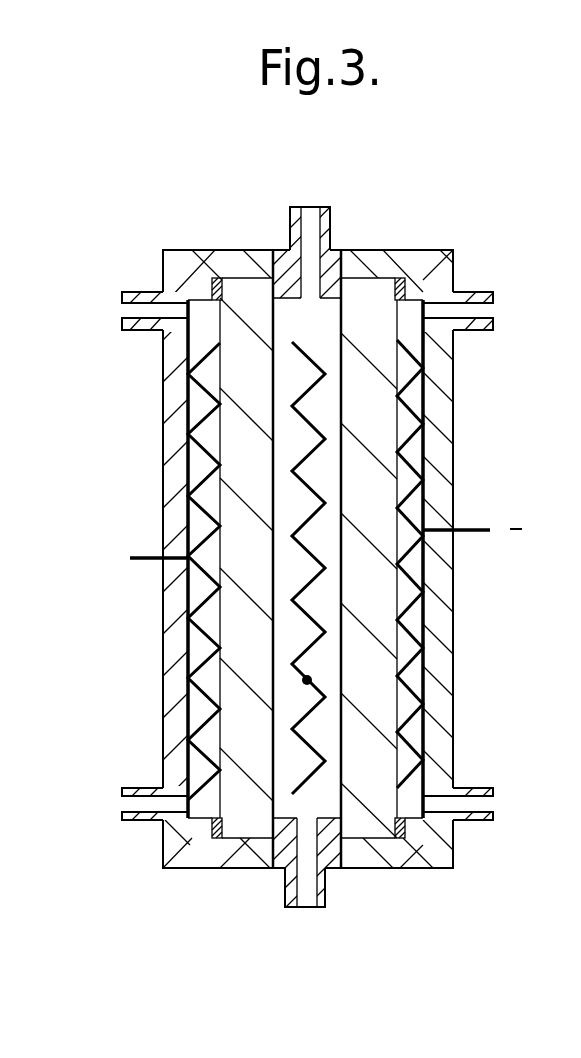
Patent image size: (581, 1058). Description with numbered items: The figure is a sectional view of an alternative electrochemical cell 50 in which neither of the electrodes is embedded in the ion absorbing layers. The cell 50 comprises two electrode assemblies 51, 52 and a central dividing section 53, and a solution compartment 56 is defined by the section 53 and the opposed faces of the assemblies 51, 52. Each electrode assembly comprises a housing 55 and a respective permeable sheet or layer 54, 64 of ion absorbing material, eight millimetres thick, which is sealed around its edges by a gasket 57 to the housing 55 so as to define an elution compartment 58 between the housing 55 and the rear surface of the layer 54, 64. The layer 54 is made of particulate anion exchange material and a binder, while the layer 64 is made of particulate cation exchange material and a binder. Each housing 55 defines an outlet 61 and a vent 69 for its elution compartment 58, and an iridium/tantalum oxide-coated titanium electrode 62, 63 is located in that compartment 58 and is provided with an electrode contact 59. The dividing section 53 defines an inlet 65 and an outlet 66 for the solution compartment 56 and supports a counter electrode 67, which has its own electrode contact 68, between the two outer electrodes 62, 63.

The electrochemical cell 50 is at (413, 213).
The electrode assembly 51 is at (240, 247).
The electrode assembly 52 is at (435, 248).
The dividing section 53 is at (337, 262).
The permeable sheet or layer 54 is at (235, 817).
The housing 55 is at (170, 740).
The solution compartment 56 is at (287, 803).
The gasket 57 is at (212, 276).
The elution compartment 58 is at (190, 457).
The electrode contact 59 is at (152, 563).
The outlet 61 is at (130, 803).
The iridium/tantalum oxide-coated titanium electrode 62 is at (217, 508).
The iridium/tantalum oxide-coated titanium electrode 63 is at (405, 494).
The permeable sheet or layer 64 is at (368, 825).
The inlet 65 is at (307, 900).
The outlet 66 is at (310, 220).
The counter electrode 67 is at (307, 680).
The electrode contact 68 is at (307, 680).
The vent 69 is at (135, 312).